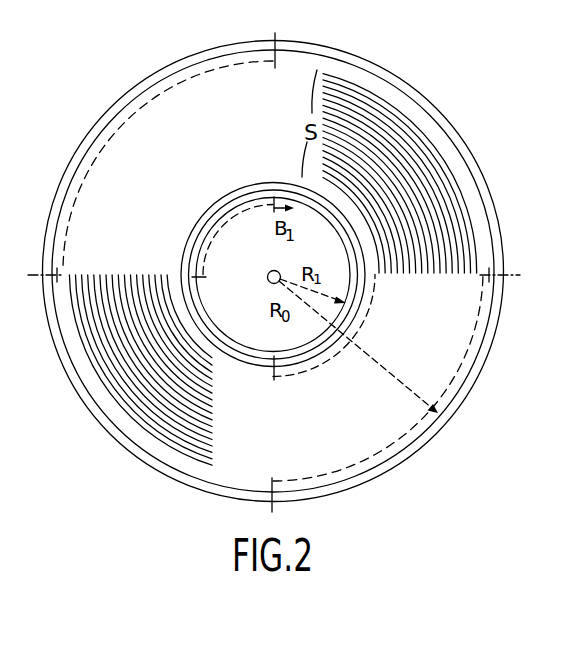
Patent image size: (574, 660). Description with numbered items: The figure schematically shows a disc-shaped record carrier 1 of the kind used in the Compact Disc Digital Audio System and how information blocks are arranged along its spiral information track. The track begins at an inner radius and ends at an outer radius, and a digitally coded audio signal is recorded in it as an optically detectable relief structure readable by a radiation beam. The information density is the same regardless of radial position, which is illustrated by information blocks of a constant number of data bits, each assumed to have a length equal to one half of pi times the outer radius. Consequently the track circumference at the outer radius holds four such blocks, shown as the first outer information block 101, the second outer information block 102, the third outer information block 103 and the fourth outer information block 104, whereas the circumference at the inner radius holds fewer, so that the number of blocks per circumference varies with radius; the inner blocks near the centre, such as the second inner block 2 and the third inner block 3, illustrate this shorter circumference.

The disc-shaped record carrier 1 is at (413, 137).
The information block B101 101 is at (293, 67).
The information block B102 102 is at (482, 275).
The information block B103 103 is at (272, 481).
The information block B104 104 is at (62, 275).
The inner boundary B2 2 is at (201, 255).
The inner boundary B3 3 is at (274, 372).